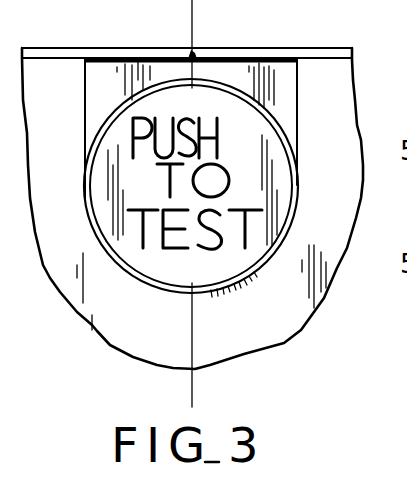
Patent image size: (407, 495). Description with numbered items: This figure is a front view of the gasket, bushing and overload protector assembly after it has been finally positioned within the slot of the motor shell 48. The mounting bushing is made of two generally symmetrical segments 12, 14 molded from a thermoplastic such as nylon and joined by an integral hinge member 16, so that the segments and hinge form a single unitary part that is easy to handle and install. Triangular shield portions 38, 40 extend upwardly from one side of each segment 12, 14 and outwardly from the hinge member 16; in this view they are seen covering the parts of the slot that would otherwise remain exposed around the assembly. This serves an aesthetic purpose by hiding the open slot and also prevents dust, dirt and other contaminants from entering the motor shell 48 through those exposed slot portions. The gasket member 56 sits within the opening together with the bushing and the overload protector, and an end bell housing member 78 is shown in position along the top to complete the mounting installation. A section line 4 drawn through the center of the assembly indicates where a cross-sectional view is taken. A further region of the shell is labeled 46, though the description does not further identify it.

The section line 4- 4 is at (158, 395).
The segment 12 is at (74, 177).
The segment 14 is at (308, 179).
The hinge member 16 is at (198, 52).
The shield portion 38 is at (102, 90).
The shield portion 40 is at (282, 85).
The mounting panel 46 is at (338, 237).
The motor shell 48 is at (349, 134).
The gasket member 56 is at (112, 226).
The end bell housing member 78 is at (287, 50).